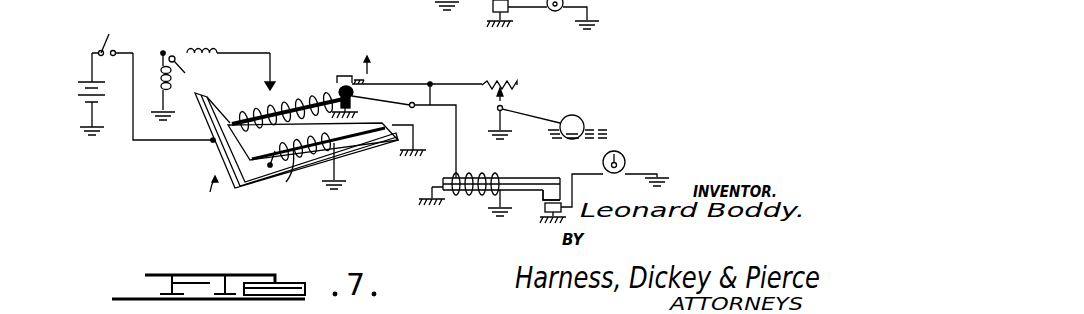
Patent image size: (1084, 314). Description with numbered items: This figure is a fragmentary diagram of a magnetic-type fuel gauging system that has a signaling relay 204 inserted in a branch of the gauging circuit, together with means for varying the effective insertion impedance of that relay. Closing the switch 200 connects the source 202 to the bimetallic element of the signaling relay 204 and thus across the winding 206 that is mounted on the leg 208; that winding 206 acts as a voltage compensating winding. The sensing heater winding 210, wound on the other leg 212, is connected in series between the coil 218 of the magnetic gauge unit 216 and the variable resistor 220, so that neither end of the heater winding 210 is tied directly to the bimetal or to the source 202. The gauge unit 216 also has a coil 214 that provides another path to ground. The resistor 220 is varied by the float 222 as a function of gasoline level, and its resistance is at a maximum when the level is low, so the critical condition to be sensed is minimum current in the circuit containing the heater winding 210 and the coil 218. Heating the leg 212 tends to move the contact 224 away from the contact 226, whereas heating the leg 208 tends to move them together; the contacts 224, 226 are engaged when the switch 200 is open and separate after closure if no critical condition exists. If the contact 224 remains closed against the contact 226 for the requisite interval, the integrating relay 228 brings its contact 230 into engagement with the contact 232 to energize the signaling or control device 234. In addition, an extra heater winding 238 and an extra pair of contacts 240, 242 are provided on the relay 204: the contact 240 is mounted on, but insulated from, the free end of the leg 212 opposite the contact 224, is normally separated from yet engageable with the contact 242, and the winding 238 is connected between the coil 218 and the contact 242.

The switch 200 is at (107, 41).
The source 202 is at (113, 100).
The signaling relay 204 is at (206, 160).
The winding 206 is at (286, 182).
The leg 208 is at (372, 147).
The heater winding 210 is at (246, 83).
The leg 212 is at (323, 86).
The coil 214 is at (152, 60).
The magnetic gauge unit 216 is at (169, 38).
The coil 218 is at (199, 51).
The variable resistor 220 is at (502, 80).
The float 222 is at (528, 112).
The contact 224 is at (369, 95).
The contact 226 is at (318, 153).
The integrating relay 228 is at (517, 178).
The contact 230 is at (543, 200).
The contact 232 is at (552, 220).
The signaling or control device 234 is at (624, 157).
The heater winding 238 is at (274, 82).
The contact 240 is at (378, 86).
The contact 242 is at (350, 80).